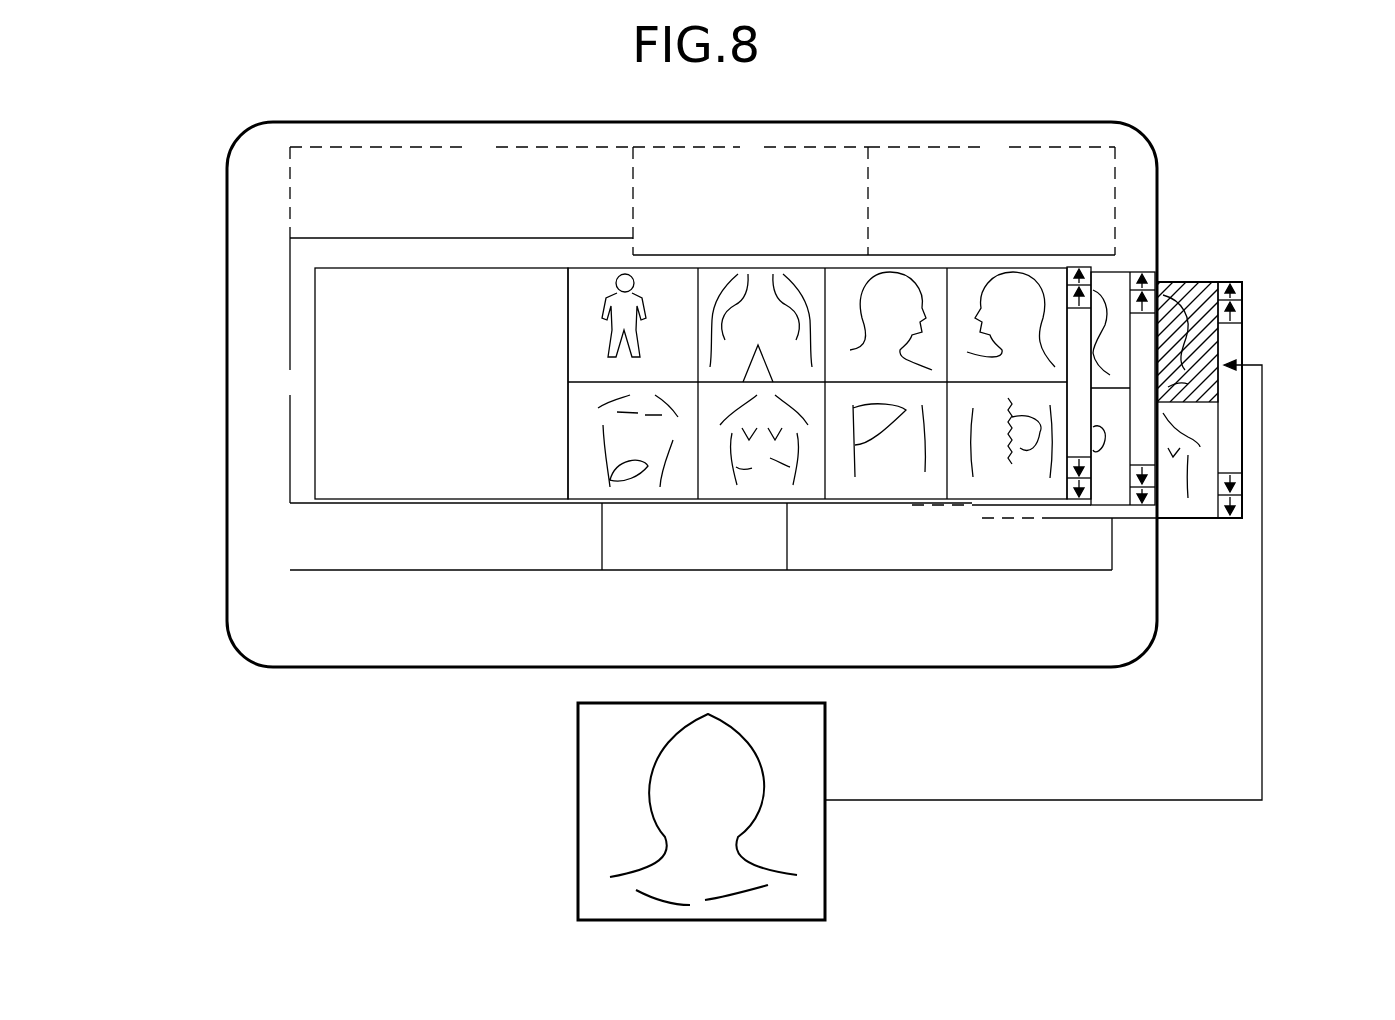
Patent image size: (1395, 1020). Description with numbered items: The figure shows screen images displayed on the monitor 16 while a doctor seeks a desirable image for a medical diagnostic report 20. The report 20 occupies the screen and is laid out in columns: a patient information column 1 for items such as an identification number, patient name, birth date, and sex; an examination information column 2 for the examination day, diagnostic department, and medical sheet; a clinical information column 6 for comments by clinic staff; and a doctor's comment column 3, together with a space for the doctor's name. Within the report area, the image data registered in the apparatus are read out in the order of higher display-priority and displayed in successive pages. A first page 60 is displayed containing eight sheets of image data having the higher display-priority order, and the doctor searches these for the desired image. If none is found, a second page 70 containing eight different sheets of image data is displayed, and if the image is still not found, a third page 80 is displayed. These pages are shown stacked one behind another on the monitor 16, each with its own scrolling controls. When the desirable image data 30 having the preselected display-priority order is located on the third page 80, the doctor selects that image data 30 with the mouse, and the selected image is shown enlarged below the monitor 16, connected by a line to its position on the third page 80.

The patient information column 1 is at (461, 185).
The examination information column 2 is at (750, 194).
The doctor's comment column 3 is at (424, 370).
The clinical information column 6 is at (991, 194).
The monitor 16 is at (1257, 63).
The medical diagnostic report 20 is at (290, 297).
The image data 30 is at (825, 858).
The first page 60 is at (1035, 268).
The second page 70 is at (1123, 272).
The third page 80 is at (1193, 282).